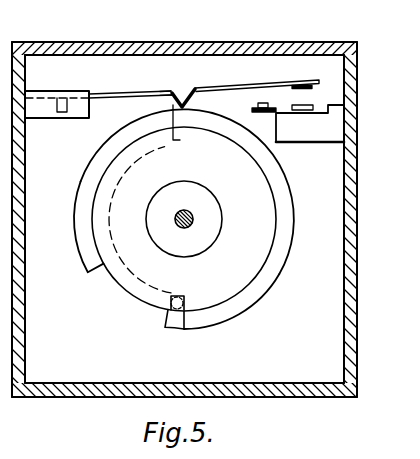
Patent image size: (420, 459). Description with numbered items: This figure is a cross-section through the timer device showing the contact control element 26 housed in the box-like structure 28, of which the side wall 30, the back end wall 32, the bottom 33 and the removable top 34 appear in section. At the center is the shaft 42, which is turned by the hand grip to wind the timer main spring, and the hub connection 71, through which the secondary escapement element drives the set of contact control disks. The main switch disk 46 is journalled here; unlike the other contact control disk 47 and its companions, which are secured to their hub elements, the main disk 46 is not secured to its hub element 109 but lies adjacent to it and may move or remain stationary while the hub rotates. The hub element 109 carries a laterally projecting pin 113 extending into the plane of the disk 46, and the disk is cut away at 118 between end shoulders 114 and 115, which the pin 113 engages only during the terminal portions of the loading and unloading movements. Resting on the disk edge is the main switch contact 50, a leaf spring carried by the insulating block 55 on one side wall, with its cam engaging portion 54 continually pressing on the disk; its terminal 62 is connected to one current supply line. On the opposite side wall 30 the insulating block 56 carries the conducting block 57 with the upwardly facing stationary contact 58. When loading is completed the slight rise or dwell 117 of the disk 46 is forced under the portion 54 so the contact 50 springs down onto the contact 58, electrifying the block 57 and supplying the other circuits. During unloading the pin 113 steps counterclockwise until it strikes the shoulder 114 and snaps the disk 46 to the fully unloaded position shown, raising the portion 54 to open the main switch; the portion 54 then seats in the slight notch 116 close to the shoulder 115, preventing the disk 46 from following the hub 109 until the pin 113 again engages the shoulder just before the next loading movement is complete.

The contact control element 26 is at (118, 323).
The box-like structure 28 is at (133, 42).
The side wall 30 is at (350, 292).
The back end wall 32 is at (300, 362).
The bottom 33 is at (231, 397).
The removable top 34 is at (170, 50).
The shaft 42 is at (183, 219).
The main switch disk 46 is at (280, 257).
The contact control disk 47 is at (82, 246).
The main switch contact 50 is at (242, 84).
The cam engaging portion 54 is at (204, 62).
The insulating block 55 is at (59, 90).
The insulating block 56 is at (323, 131).
The conducting block 57 is at (302, 117).
The stationary contact 58 is at (313, 104).
The terminal 62 is at (35, 96).
The hub connection 71 is at (209, 202).
The hub element 109 is at (244, 299).
The laterally projecting pin 113 is at (165, 313).
The end shoulder 114 is at (186, 304).
The end shoulder 115 is at (182, 141).
The notch 116 is at (202, 105).
The rise 117 is at (172, 106).
The cut away 118 is at (130, 272).